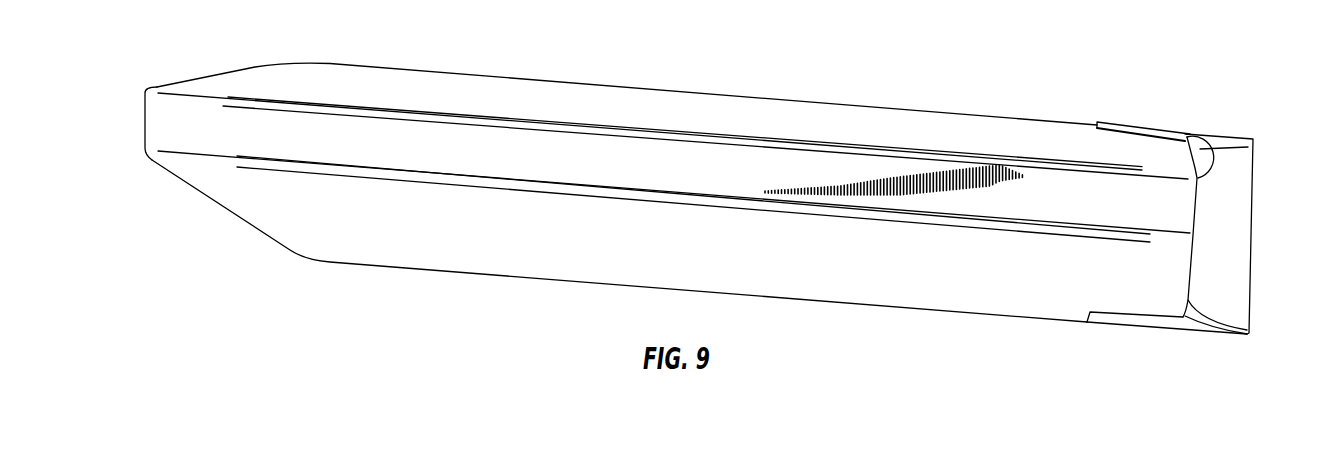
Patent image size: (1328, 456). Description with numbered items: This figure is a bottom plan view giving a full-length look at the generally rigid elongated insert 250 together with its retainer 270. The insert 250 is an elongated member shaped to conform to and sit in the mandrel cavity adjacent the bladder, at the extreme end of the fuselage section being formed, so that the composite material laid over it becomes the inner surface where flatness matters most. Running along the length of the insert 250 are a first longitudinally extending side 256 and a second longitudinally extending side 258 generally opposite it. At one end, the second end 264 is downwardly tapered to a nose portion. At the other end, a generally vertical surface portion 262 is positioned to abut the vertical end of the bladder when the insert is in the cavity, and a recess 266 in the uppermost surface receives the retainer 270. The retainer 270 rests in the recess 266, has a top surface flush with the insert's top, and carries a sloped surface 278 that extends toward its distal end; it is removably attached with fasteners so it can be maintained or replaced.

The insert 250 is at (891, 83).
The first longitudinally extending side 256 is at (432, 257).
The second longitudinally extending side 258 is at (507, 97).
The generally vertical surface portion 262 is at (1213, 143).
The second end 264 is at (182, 82).
The recess 266 is at (1133, 315).
The retainer 270 is at (1222, 134).
The sloped surface 278 is at (1246, 255).